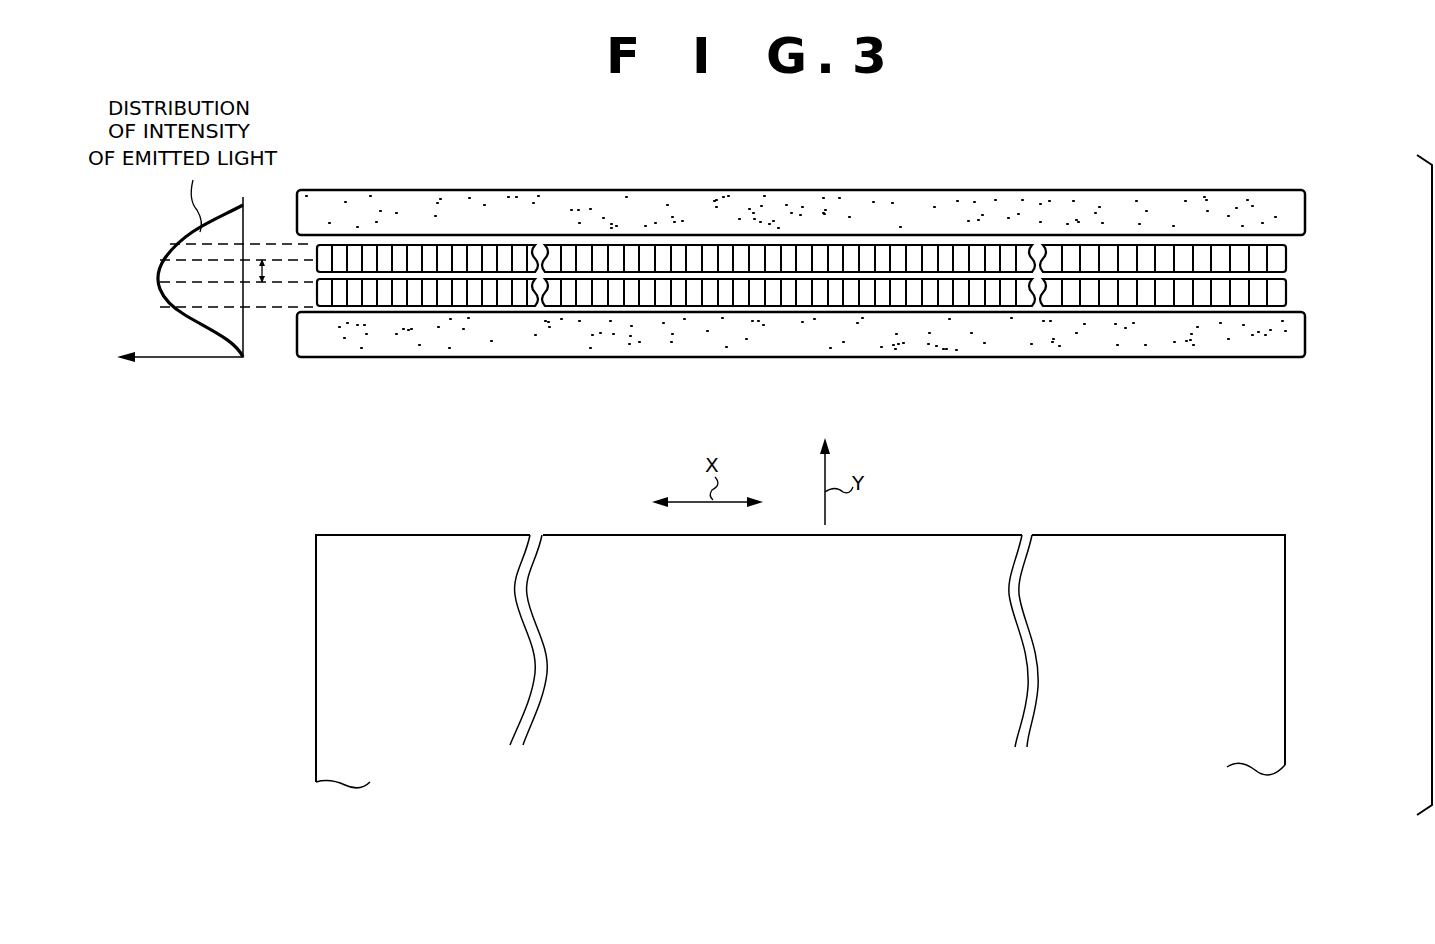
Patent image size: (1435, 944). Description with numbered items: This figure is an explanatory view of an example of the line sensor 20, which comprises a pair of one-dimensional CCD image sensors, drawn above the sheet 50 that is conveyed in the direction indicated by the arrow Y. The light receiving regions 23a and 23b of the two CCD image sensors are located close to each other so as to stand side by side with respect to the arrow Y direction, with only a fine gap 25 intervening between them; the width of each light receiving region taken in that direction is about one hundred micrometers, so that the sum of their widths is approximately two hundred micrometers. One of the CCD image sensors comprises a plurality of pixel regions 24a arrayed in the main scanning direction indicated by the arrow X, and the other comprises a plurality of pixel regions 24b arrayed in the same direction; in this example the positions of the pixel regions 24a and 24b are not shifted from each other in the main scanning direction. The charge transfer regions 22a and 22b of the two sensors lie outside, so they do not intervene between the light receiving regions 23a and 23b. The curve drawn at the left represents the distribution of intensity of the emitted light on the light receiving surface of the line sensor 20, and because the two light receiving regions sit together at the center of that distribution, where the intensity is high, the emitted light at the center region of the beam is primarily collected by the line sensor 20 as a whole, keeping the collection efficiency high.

The line sensor 20 is at (920, 148).
The charge transfer region 22a is at (1230, 202).
The charge transfer region 22b is at (1258, 353).
The light receiving region 23a is at (1288, 253).
The light receiving region 23b is at (1288, 297).
The pixel regions 24a is at (1280, 260).
The pixel regions 24b is at (1280, 287).
The fine gap 25 is at (308, 277).
The sheet 50 is at (1183, 535).